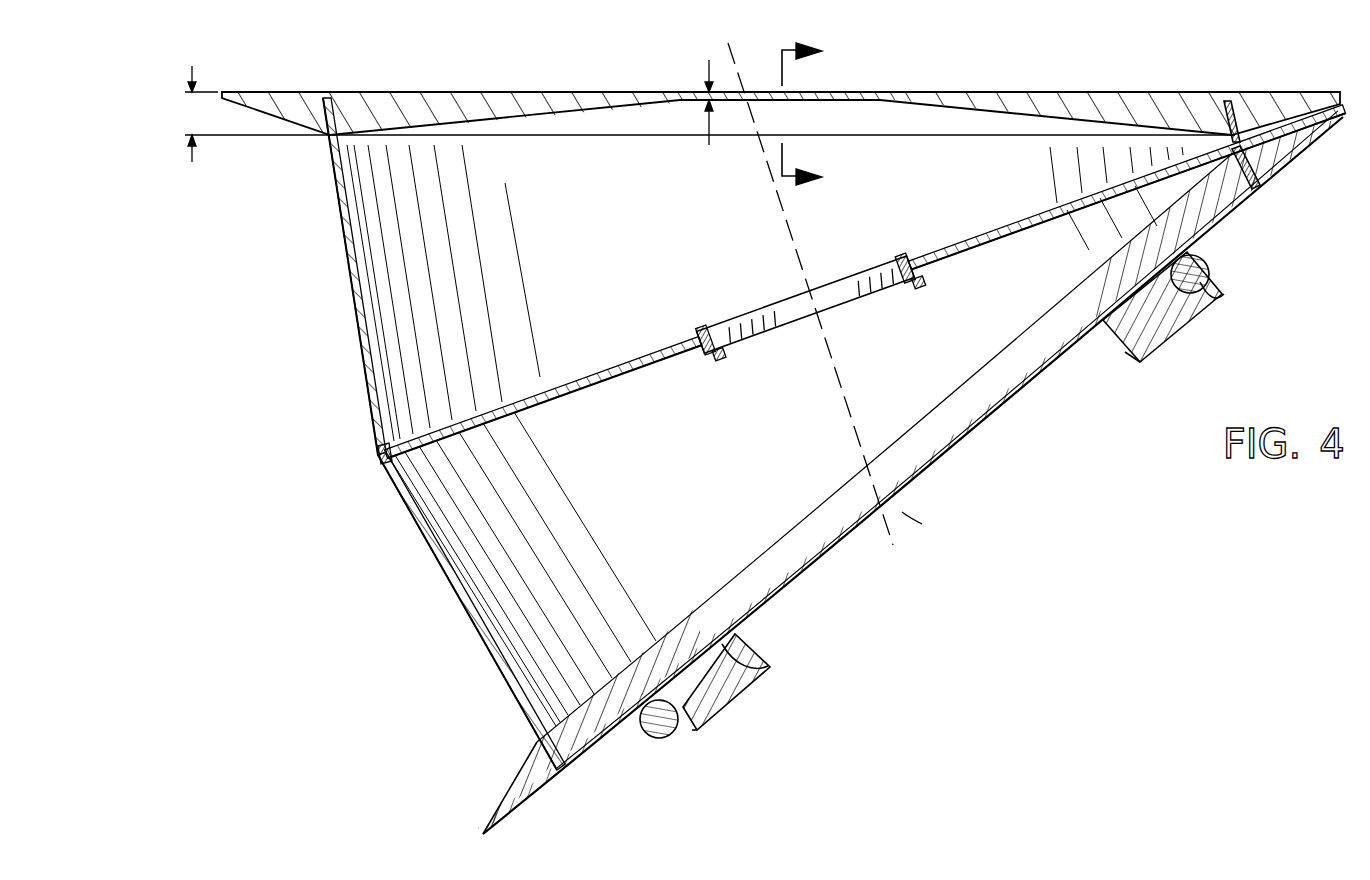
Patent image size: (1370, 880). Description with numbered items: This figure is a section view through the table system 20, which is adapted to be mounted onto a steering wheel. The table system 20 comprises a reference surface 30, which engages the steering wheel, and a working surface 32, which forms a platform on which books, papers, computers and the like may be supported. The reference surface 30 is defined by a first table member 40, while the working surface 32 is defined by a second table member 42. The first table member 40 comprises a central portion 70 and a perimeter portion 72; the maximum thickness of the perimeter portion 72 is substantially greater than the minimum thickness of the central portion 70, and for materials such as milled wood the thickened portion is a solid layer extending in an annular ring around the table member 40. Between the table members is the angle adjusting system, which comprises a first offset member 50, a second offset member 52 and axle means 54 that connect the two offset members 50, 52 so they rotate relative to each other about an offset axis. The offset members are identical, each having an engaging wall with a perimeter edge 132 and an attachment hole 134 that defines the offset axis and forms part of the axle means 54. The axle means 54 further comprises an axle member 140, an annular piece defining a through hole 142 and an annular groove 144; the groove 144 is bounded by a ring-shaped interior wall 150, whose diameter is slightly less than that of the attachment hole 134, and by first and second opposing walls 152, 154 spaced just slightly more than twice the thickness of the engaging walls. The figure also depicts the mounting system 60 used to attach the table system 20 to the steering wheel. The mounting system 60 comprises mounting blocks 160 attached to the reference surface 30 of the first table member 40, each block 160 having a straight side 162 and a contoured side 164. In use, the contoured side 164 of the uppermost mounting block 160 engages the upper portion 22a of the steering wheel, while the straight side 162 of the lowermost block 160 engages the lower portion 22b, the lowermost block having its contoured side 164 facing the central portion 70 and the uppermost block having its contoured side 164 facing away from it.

The table system 20 is at (298, 324).
The upper portion of the steering wheel 22a is at (1205, 264).
The lower portion of the steering wheel 22b is at (660, 740).
The reference surface 30 is at (1022, 397).
The working surface 32 is at (1020, 93).
The first table member 40 is at (1223, 207).
The second table member 42 is at (1118, 107).
The first offset member 50 is at (437, 578).
The second offset member 52 is at (347, 232).
The axle means 54 is at (737, 375).
The mounting system 60 is at (750, 734).
The central portion 70 is at (905, 47).
The perimeter portion 72 is at (650, 47).
The perimeter edge 132 is at (376, 455).
The attachment hole 134 is at (838, 294).
The axle member 140 is at (778, 296).
The through hole 142 is at (773, 324).
The annular groove 144 is at (718, 358).
The interior wall 150 is at (894, 283).
The first opposing wall 152 is at (908, 258).
The second opposing wall 154 is at (922, 282).
The mounting block 160 is at (1185, 313).
The straight side 162 is at (1125, 354).
The contoured side 164 is at (1215, 290).